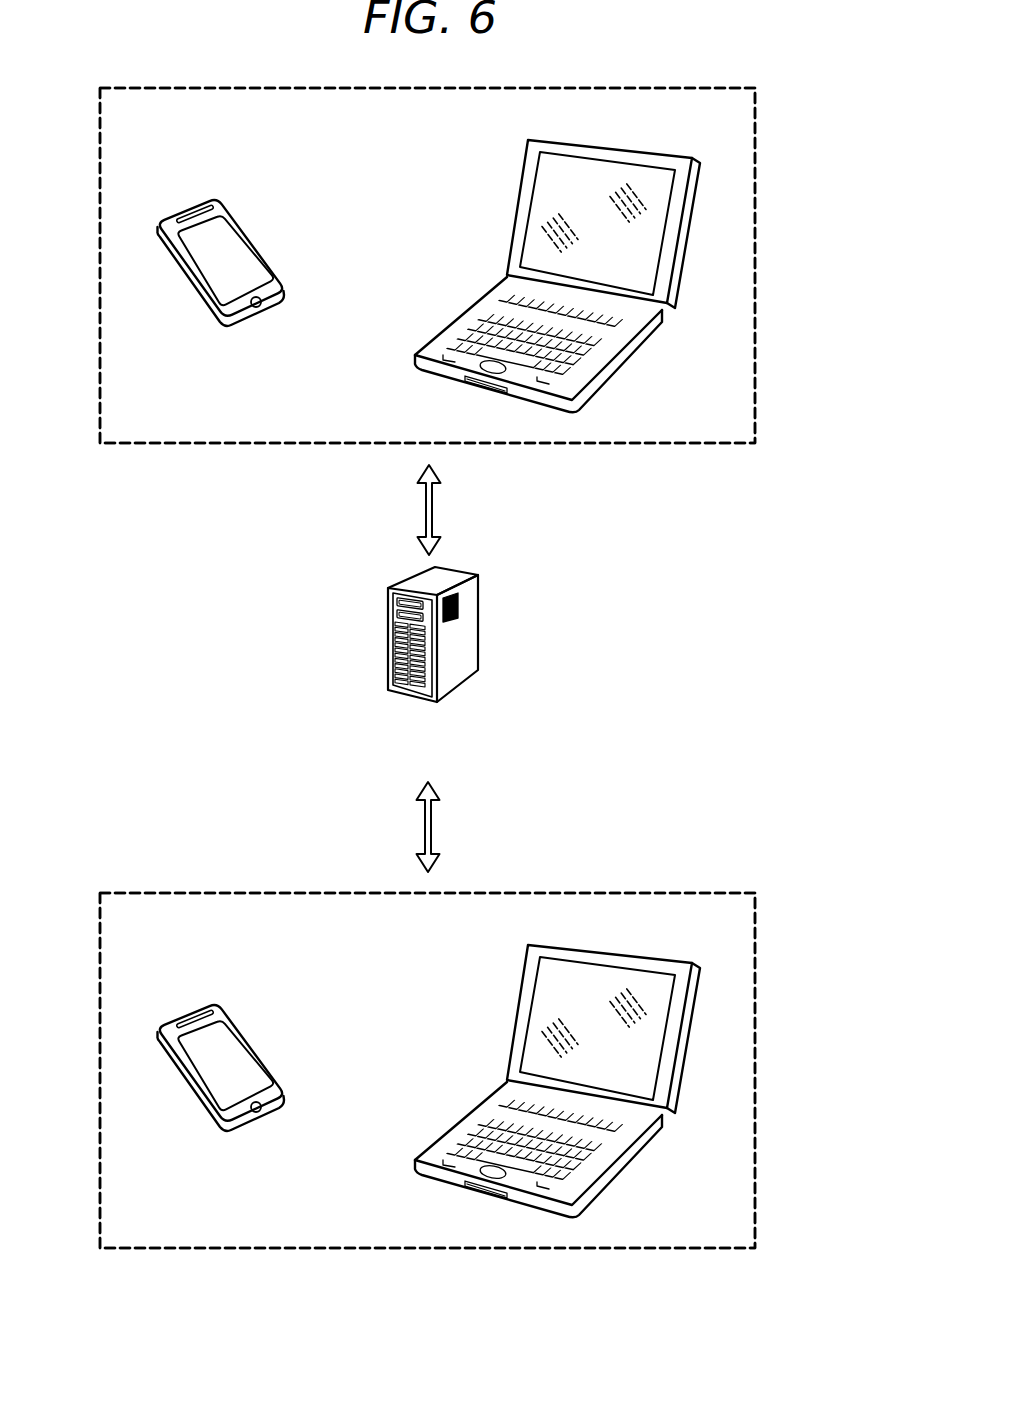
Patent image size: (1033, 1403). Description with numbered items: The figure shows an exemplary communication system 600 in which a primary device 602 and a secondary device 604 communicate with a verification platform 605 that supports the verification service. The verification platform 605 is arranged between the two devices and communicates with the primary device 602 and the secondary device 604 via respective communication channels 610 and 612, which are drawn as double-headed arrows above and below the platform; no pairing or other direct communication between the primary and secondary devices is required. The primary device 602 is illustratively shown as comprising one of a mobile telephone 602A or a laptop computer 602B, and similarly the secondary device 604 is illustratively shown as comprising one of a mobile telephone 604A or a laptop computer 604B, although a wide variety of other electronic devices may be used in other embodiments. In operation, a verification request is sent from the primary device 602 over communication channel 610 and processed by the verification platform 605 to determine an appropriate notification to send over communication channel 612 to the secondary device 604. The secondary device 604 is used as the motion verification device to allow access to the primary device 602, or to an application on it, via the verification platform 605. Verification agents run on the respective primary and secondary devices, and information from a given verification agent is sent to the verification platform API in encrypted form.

The communication system 600 is at (656, 64).
The primary device 602 is at (100, 104).
The mobile telephone 602A is at (247, 232).
The laptop computer 602B is at (627, 153).
The secondary device 604 is at (100, 909).
The mobile telephone 604A is at (247, 1037).
The laptop computer 604B is at (627, 958).
The verification platform 605 is at (479, 623).
The communication channel 610 is at (423, 508).
The communication channel 612 is at (422, 823).